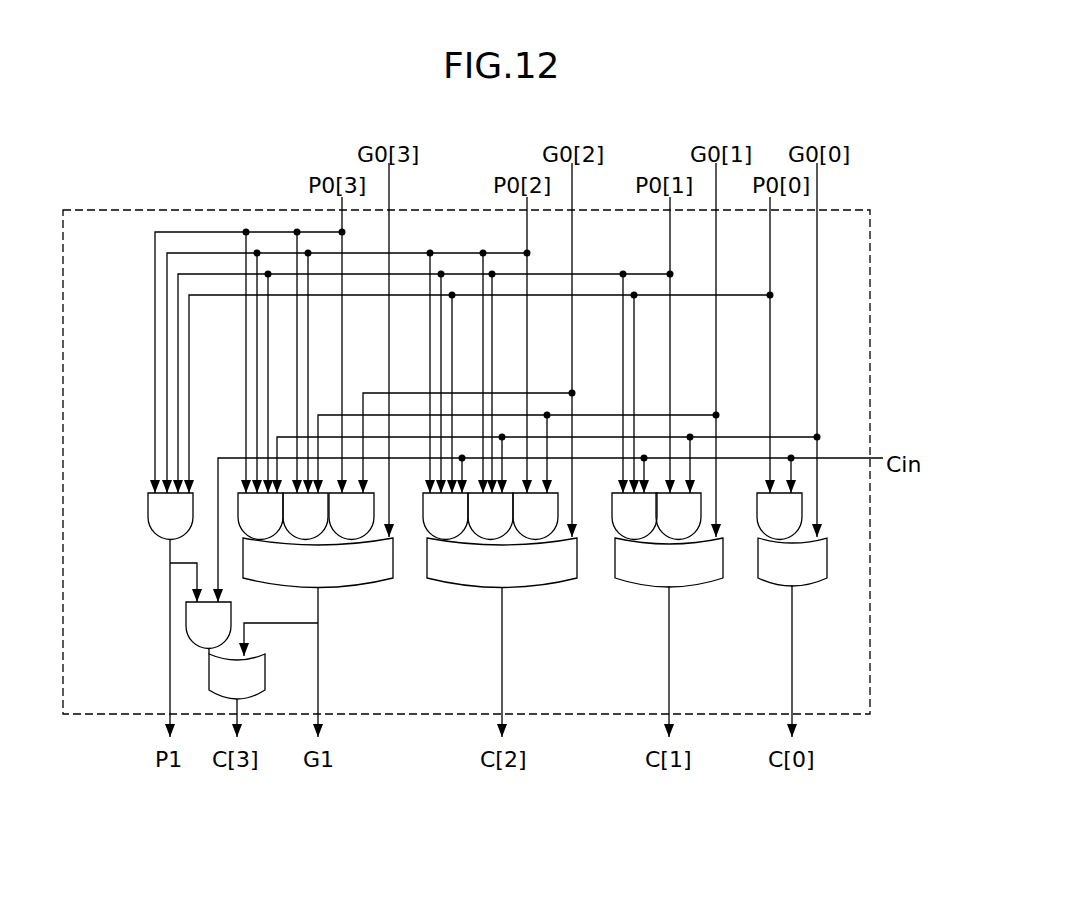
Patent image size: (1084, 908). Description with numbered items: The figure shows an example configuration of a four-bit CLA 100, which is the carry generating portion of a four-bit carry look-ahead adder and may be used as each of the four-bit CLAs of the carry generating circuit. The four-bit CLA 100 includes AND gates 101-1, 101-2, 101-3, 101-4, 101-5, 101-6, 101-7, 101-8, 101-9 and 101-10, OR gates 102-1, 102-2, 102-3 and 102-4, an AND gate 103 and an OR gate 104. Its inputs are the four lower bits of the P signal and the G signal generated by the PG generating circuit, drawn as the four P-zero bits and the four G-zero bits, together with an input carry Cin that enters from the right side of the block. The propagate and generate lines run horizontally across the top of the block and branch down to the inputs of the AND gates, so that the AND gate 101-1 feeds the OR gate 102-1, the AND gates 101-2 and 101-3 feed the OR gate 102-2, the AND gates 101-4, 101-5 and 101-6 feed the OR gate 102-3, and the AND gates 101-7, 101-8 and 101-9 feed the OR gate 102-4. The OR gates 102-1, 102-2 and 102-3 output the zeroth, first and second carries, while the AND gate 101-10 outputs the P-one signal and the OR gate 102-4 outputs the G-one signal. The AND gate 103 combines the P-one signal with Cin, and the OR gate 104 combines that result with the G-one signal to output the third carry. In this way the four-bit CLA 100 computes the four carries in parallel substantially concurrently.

The 4-bit CLA 100 is at (870, 262).
The AND gate 101-1 is at (793, 540).
The AND gate 101-2 is at (687, 540).
The AND gate 101-3 is at (658, 540).
The AND gate 101-4 is at (555, 537).
The AND gate 101-5 is at (515, 537).
The AND gate 101-6 is at (470, 537).
The AND gate 101-7 is at (366, 538).
The AND gate 101-8 is at (330, 538).
The AND gate 101-9 is at (283, 537).
The AND gate 101-10 is at (148, 494).
The OR gate 102-1 is at (790, 590).
The OR gate 102-2 is at (667, 590).
The OR gate 102-3 is at (497, 590).
The OR gate 102-4 is at (393, 589).
The AND gate 103 is at (232, 628).
The OR gate 104 is at (266, 674).